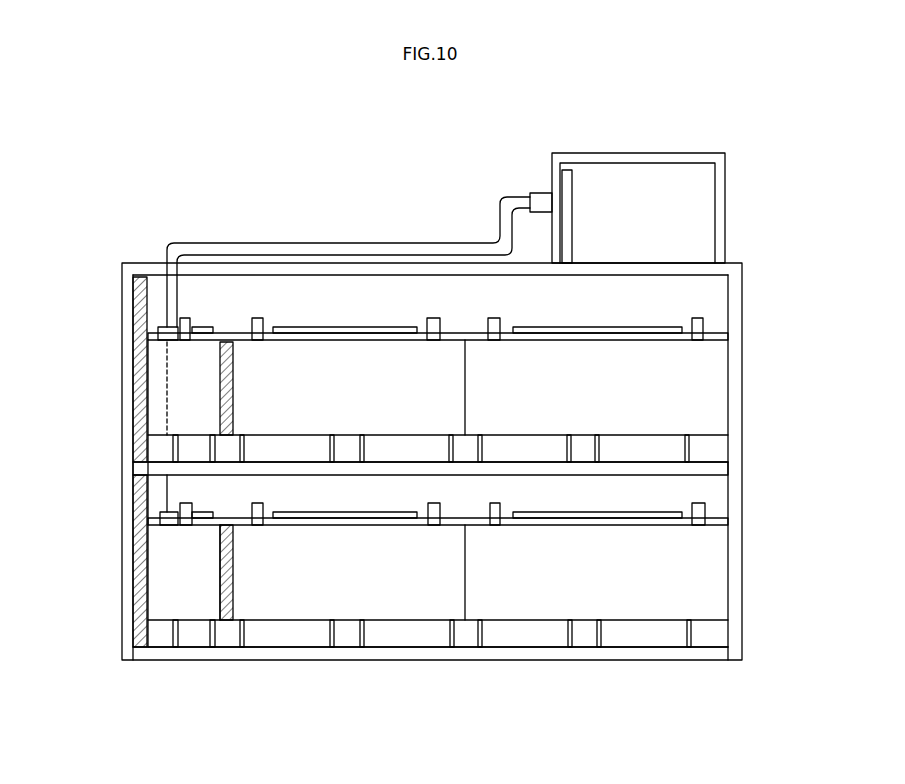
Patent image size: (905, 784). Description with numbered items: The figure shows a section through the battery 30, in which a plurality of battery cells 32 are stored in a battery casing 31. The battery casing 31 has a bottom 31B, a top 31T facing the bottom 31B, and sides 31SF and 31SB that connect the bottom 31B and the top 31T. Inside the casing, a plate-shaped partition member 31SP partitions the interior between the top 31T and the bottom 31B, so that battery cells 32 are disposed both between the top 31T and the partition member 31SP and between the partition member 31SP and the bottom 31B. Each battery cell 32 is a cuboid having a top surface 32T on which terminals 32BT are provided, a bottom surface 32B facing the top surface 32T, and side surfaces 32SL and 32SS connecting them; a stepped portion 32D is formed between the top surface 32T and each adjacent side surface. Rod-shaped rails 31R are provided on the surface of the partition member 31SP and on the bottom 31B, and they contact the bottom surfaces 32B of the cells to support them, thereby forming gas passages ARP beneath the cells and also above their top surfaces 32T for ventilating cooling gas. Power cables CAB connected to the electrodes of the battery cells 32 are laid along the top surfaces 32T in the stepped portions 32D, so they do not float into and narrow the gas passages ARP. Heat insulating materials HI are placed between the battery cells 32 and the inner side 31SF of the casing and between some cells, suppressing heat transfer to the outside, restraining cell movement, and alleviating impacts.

The battery 30 is at (152, 168).
The battery casing 31 is at (432, 461).
The top 31T is at (357, 270).
The side 31SF is at (133, 355).
The side 31SB is at (733, 487).
The bottom 31B is at (527, 655).
The partition member 31SP is at (133, 470).
The rail 31R is at (163, 432).
The battery cell 32 is at (287, 503).
The top surface 32T is at (202, 503).
The bottom surface 32B is at (150, 440).
The stepped portion 32D is at (333, 327).
The terminal 32BT is at (705, 328).
The side surface 32SL is at (238, 573).
The side surface 32SS is at (216, 590).
The heat insulating material HI is at (133, 330).
The power cable CAB is at (517, 207).
The gas passage ARP is at (400, 320).